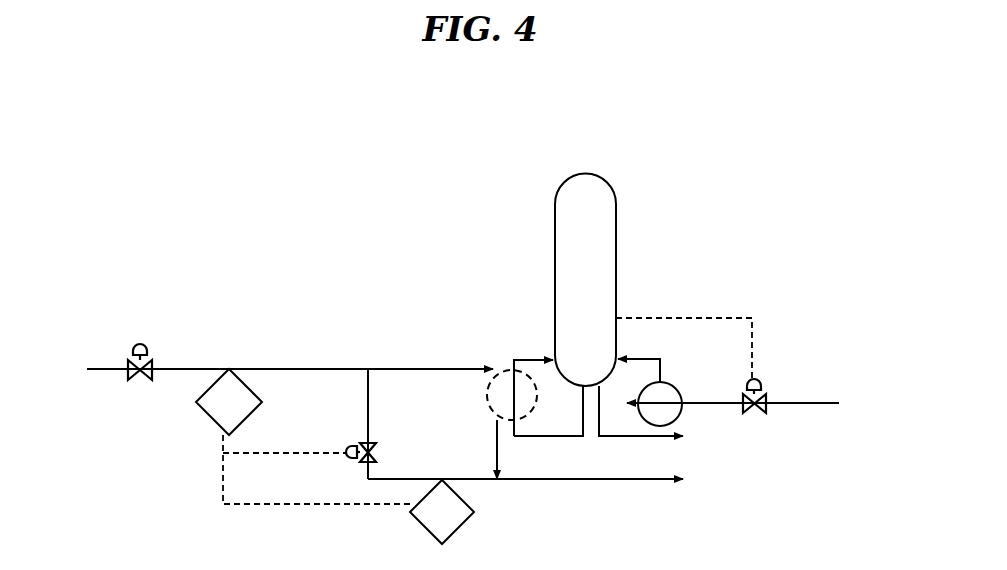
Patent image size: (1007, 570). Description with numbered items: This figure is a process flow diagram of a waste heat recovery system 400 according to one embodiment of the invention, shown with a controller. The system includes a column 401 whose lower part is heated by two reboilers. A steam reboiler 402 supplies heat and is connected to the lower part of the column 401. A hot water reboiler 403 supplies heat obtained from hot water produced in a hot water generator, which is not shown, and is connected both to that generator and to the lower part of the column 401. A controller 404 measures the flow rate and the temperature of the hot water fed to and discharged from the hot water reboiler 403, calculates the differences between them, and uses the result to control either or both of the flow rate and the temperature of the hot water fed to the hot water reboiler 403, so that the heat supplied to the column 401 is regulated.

The waste heat recovery system 400 is at (477, 160).
The column 401 is at (616, 240).
The steam reboiler 402 is at (672, 387).
The hot water reboiler 403 is at (513, 362).
The controller 404 is at (362, 445).